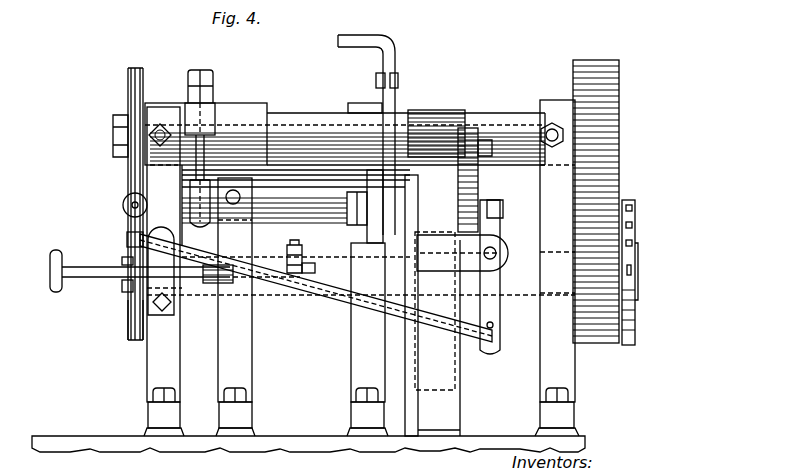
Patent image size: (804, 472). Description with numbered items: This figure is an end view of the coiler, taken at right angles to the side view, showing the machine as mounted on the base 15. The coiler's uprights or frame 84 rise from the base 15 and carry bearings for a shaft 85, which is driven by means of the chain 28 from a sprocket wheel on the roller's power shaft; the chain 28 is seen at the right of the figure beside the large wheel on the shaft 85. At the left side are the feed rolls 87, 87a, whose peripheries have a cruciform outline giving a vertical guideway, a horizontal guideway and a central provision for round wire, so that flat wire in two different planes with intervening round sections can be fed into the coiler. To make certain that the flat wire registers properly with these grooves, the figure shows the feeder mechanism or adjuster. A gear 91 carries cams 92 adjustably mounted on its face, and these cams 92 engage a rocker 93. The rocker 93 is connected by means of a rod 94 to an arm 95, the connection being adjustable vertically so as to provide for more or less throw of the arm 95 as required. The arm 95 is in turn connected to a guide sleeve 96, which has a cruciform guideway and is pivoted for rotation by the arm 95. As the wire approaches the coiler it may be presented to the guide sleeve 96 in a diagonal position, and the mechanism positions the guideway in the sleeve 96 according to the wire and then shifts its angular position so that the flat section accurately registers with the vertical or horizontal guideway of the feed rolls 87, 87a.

The base 15 is at (297, 436).
The chain 28 is at (632, 202).
The uprights or frame 84 is at (147, 372).
The shaft 85 is at (303, 118).
The feed roll 87 is at (127, 107).
The feed roll 87a is at (129, 334).
The gear 91 is at (478, 181).
The cams 92 is at (485, 146).
The rocker 93 is at (500, 213).
The rod 94 is at (310, 288).
The arm 95 is at (127, 237).
The guide sleeve 96 is at (124, 210).